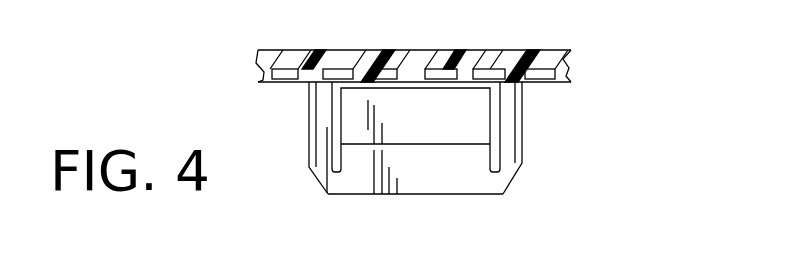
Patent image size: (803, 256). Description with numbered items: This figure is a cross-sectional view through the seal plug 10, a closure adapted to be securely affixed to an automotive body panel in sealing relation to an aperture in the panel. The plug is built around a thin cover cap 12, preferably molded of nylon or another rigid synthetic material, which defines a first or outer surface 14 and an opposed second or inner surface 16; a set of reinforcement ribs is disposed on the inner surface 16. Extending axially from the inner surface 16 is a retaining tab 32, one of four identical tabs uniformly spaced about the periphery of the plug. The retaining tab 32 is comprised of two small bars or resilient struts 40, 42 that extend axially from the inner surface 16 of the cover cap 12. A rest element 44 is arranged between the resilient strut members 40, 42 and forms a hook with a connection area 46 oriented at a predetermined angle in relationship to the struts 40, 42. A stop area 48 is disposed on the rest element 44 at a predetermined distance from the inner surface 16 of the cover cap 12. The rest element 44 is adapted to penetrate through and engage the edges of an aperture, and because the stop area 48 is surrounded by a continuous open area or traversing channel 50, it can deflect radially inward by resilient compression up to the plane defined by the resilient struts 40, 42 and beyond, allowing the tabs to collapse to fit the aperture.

The seal plug 10 is at (590, 45).
The cover cap 12 is at (449, 61).
The first or outer surface 14 is at (290, 53).
The second or inner surface 16 is at (543, 84).
The retaining tab 32 is at (305, 214).
The resilient strut 40 is at (318, 103).
The resilient strut 42 is at (505, 133).
The rest element 44 is at (383, 185).
The connection area 46 is at (445, 147).
The stop area 48 is at (400, 128).
The traversing channel 50 is at (397, 88).